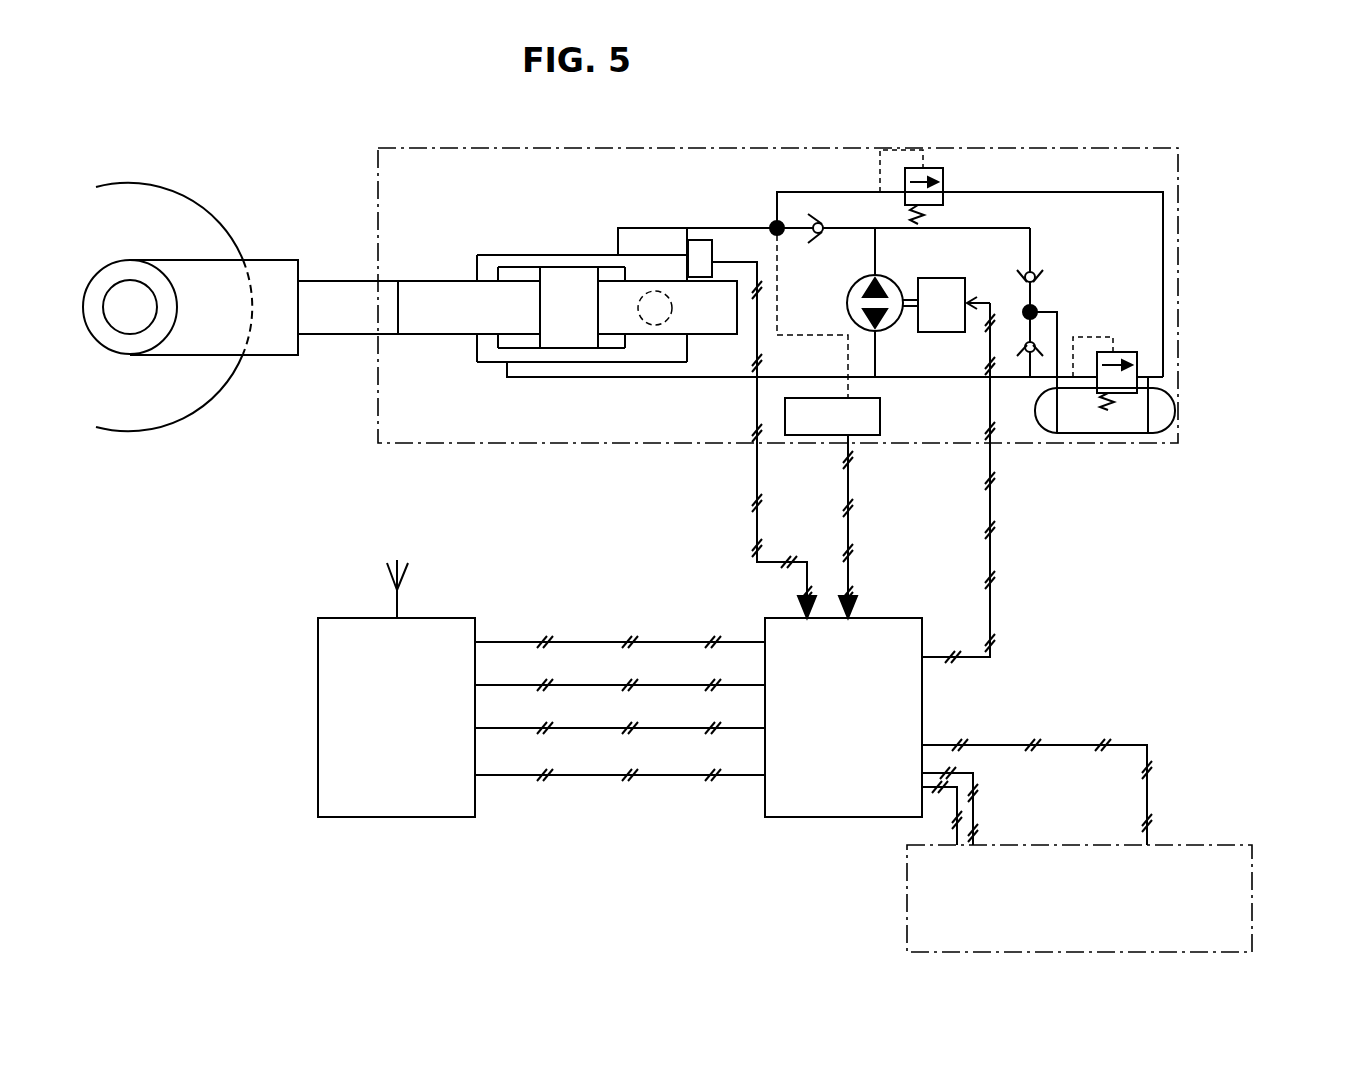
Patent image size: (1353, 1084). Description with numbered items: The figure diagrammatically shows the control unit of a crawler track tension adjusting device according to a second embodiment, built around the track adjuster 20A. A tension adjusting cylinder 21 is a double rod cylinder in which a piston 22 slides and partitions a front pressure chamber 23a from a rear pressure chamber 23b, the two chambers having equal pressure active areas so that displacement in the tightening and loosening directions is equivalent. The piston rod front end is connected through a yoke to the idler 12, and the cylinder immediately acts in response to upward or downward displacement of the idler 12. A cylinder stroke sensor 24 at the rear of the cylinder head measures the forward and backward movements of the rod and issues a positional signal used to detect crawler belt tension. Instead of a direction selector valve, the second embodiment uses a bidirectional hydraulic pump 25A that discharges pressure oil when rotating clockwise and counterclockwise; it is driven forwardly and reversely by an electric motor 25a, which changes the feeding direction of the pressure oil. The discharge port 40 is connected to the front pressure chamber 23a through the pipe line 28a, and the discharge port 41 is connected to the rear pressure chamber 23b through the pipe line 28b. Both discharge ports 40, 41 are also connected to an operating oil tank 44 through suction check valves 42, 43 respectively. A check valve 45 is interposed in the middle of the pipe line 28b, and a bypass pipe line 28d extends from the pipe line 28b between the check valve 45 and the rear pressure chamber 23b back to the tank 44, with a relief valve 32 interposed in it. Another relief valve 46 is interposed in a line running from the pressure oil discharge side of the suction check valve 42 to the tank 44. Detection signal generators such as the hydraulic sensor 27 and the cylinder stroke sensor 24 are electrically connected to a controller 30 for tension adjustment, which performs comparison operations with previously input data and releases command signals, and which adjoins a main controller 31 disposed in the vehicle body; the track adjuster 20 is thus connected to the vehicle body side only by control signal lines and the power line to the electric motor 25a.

The idler 12 is at (180, 202).
The track adjuster 20A is at (397, 418).
The tension adjusting cylinder 21 is at (487, 255).
The piston 22 is at (572, 280).
The front pressure chamber 23a is at (505, 345).
The rear pressure chamber 23b is at (612, 346).
The cylinder stroke sensor 24 is at (700, 240).
The pipe line 28a is at (555, 377).
The pipe line 28b is at (630, 228).
The bypass pipe line 28d is at (1068, 192).
The relief valve 32 is at (943, 173).
The check valve 45 is at (820, 242).
The discharge port 40 is at (875, 332).
The discharge port 41 is at (880, 276).
The electric motor 25a is at (952, 278).
The hydraulic pump 25A is at (905, 328).
The suction check valve 43 is at (1038, 273).
The suction check valve 42 is at (1038, 343).
The relief valve 46 is at (1133, 352).
The operating oil tank 44 is at (1090, 372).
The hydraulic sensor 27 is at (880, 413).
The main controller 31 is at (422, 812).
The controller 30 is at (787, 812).
The track adjuster 20 is at (1252, 862).